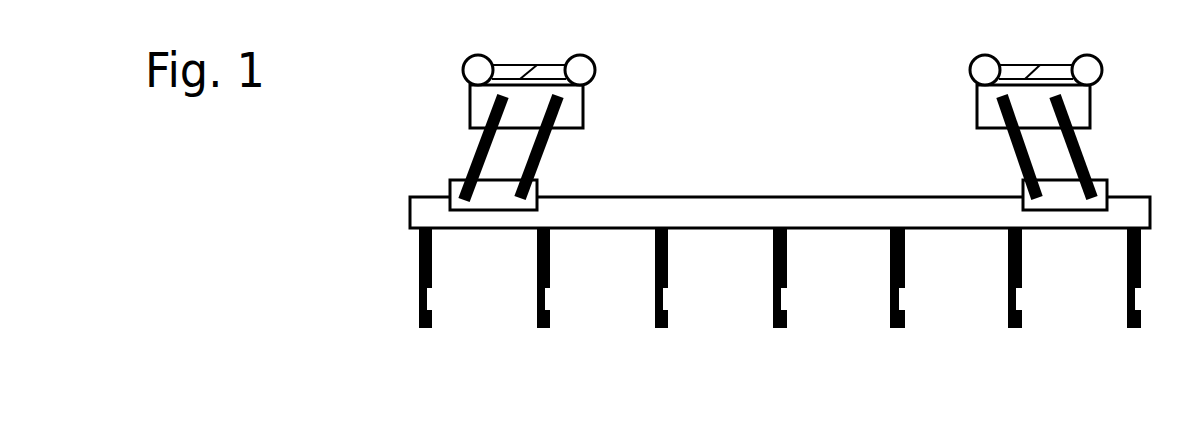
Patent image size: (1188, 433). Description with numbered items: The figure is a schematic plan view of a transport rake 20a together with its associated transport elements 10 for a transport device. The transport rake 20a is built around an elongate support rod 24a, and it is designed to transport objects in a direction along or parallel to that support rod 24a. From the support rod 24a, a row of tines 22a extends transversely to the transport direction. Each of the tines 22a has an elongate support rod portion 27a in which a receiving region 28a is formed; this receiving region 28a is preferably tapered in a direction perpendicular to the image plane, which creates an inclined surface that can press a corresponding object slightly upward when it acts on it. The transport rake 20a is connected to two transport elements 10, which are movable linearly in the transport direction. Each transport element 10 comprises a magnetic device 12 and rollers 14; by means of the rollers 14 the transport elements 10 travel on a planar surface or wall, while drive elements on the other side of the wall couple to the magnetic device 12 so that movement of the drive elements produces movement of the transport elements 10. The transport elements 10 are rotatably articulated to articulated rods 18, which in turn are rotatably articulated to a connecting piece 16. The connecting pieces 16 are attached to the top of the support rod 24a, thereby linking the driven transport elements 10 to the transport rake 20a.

The transport element 10 is at (473, 97).
The magnetic device 12 is at (540, 62).
The rollers 14 is at (982, 73).
The connecting piece 16 is at (1025, 192).
The articulated rod 18 is at (1082, 143).
The transport rake 20a is at (415, 163).
The tines 22a is at (1127, 320).
The support rod 24a is at (435, 215).
The support rod portion 27a is at (892, 258).
The receiving region 28a is at (658, 305).